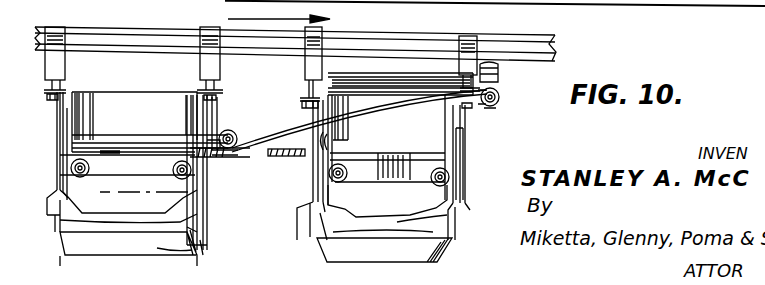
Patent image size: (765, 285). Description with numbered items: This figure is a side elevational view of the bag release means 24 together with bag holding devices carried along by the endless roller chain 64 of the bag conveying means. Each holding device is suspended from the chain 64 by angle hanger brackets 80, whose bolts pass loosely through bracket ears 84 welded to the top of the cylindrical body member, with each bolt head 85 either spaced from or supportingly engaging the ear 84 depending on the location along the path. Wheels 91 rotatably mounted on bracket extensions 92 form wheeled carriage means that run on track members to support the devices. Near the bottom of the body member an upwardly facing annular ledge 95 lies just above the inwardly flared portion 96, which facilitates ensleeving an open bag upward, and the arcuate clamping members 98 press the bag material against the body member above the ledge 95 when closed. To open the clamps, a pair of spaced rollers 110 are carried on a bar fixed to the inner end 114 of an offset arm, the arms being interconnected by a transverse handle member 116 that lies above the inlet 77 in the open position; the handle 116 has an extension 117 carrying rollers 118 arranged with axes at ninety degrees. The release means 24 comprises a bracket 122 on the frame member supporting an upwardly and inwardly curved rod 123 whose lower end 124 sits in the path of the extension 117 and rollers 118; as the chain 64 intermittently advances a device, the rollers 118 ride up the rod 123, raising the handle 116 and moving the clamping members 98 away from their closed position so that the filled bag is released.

The bag release means 24 is at (302, 126).
The endless roller chain 64 is at (117, 27).
The inlet 77 is at (380, 182).
The angle hanger bracket 80 is at (62, 58).
The bracket ear 84 is at (65, 83).
The bolt head 85 is at (217, 100).
The wheel 91 is at (70, 170).
The bracket extension 92 is at (103, 165).
The annular ledge 95 is at (198, 228).
The inwardly flared portion 96 is at (197, 255).
The arcuate clamping member 98 is at (108, 225).
The roller 110 is at (55, 153).
The inner end of offset arm 114 is at (67, 122).
The transverse handle member 116 is at (107, 137).
The extension 117 is at (218, 130).
The roller 118 is at (238, 142).
The bracket 122 is at (272, 158).
The curved rod 123 is at (362, 120).
The lower end of rod 124 is at (247, 158).